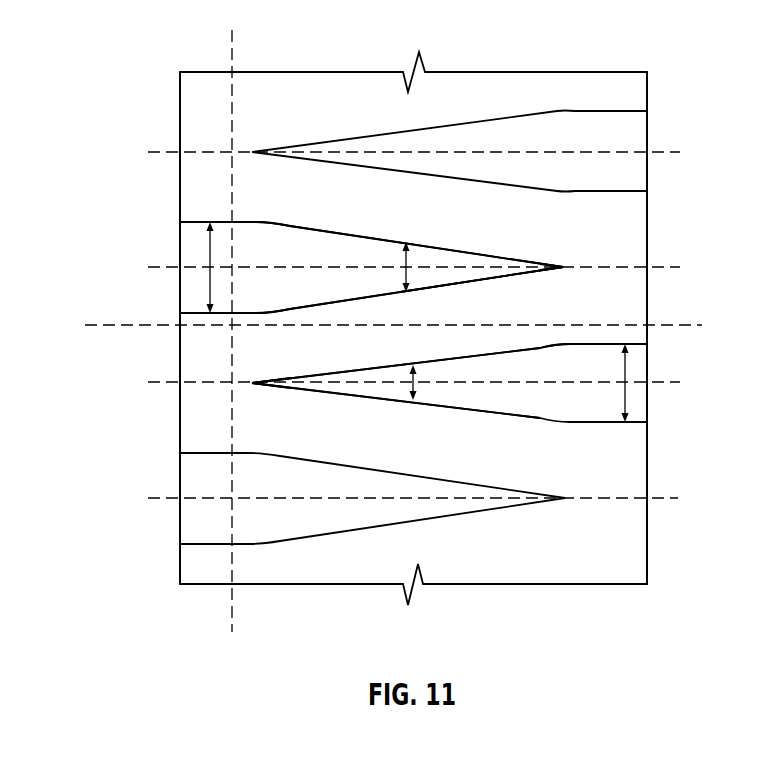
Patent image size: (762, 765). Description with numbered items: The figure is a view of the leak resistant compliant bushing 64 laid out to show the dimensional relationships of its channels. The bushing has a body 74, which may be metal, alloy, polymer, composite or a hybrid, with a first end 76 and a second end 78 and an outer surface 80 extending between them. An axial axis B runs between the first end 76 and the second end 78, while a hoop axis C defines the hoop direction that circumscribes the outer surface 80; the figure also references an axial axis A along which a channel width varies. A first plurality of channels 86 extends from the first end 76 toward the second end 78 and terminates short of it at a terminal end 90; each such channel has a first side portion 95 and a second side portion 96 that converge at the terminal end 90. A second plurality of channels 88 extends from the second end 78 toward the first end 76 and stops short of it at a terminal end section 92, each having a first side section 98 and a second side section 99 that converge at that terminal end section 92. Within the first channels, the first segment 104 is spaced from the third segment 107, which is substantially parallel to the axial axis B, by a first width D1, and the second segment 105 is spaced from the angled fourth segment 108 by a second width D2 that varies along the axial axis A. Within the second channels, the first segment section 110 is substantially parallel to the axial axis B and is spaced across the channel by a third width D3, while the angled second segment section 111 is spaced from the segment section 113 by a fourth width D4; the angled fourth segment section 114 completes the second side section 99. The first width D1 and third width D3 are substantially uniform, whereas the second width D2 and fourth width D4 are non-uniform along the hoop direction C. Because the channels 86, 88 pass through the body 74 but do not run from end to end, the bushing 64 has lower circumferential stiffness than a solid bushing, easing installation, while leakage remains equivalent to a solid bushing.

The leak resistant compliant bushing 64 is at (628, 622).
The body 74 is at (635, 547).
The first end 76 is at (180, 108).
The second end 78 is at (647, 97).
The outer surface 80 is at (283, 88).
The first plurality of channels 86 is at (160, 261).
The second plurality of channels 88 is at (690, 402).
The terminal end 90 is at (567, 262).
The terminal end section 92 is at (253, 387).
The first side portion 95 is at (259, 240).
The second side portion 96 is at (282, 292).
The first side section 98 is at (562, 354).
The second side section 99 is at (623, 378).
The first segment 104 is at (192, 230).
The second segment 105 is at (457, 249).
The third segment 107 is at (203, 312).
The fourth segment 108 is at (488, 280).
The first segment section 110 is at (613, 345).
The second segment section 111 is at (468, 358).
The fourth segment section 113 is at (626, 423).
The fourth segment section 114 is at (480, 410).
The first width D1 is at (213, 243).
The second width D2 is at (410, 262).
The third width D3 is at (623, 347).
The fourth width D4 is at (407, 388).
The axial axis A is at (432, 267).
The axial axis B is at (149, 326).
The hoop axis C is at (231, 600).